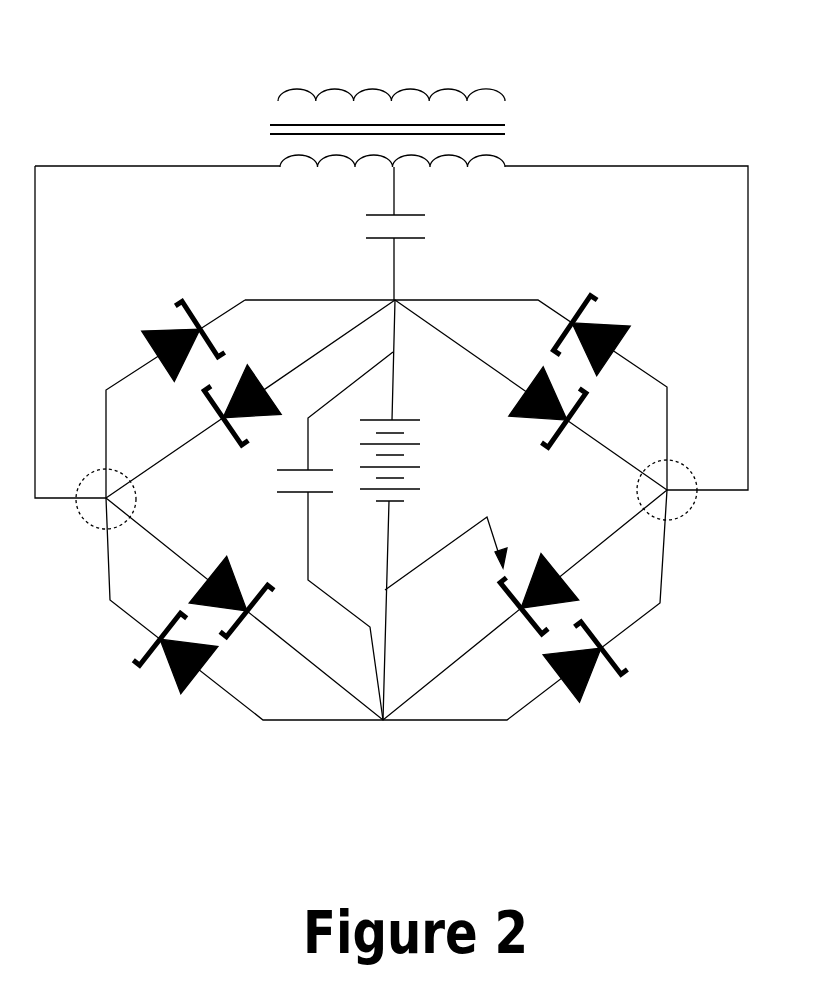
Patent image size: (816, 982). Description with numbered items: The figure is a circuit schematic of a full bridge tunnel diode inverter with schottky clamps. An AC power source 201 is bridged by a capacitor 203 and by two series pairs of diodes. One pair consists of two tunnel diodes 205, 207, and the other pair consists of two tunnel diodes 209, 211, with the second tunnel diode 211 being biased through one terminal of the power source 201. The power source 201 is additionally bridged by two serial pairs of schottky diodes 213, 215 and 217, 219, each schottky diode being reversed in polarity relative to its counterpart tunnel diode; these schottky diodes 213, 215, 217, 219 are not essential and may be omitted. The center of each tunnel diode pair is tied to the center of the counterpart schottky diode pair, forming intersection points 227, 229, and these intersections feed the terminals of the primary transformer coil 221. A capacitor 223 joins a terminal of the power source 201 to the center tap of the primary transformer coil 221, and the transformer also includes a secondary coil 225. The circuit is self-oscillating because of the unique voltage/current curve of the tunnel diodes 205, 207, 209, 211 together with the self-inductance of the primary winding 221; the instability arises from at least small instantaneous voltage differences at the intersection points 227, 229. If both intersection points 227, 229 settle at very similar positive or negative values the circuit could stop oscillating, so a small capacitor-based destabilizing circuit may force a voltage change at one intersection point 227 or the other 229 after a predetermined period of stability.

The AC power source 201 is at (418, 465).
The capacitor 203 is at (277, 480).
The tunnel diode 205 is at (253, 372).
The tunnel diode 207 is at (208, 563).
The tunnel diode 209 is at (530, 372).
The tunnel diode 211 is at (542, 543).
The schottky diode 213 is at (156, 335).
The schottky diode 215 is at (195, 685).
The schottky diode 217 is at (605, 322).
The schottky diode 219 is at (563, 687).
The primary transformer coil 221 is at (501, 158).
The capacitor 223 is at (426, 222).
The secondary coil 225 is at (392, 86).
The intersection point 227 is at (85, 528).
The intersection point 229 is at (688, 510).